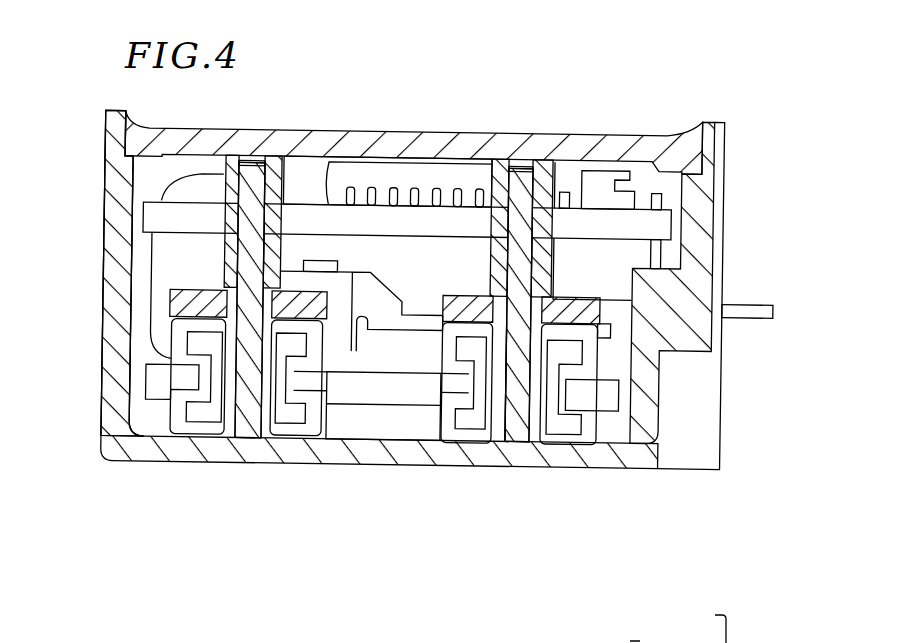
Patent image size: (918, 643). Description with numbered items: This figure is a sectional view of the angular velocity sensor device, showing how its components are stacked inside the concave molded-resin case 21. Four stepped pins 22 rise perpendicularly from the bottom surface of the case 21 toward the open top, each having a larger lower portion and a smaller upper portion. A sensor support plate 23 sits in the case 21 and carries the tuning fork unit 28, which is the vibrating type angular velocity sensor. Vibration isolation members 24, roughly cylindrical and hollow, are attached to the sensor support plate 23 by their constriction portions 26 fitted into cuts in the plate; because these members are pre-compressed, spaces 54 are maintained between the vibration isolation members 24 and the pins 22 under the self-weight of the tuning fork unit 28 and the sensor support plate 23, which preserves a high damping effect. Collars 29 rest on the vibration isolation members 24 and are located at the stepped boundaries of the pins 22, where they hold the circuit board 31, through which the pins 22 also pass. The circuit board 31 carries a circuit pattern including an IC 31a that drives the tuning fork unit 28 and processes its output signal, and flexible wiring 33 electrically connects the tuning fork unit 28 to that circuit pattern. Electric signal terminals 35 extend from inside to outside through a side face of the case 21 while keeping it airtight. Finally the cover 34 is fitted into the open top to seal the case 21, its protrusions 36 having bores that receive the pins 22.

The case 21 is at (113, 193).
The pin 22 is at (250, 437).
The sensor support plate 23 is at (389, 400).
The vibration isolation member 24 is at (192, 435).
The constriction portion 26 is at (203, 377).
The tuning fork unit 28 is at (372, 285).
The collar 29 is at (173, 302).
The circuit board 31 is at (660, 232).
The IC 31a is at (453, 177).
The flexible wiring 33 is at (152, 258).
The cover 34 is at (600, 147).
The electric signal terminal 35 is at (762, 316).
The protrusion 36 is at (256, 150).
The space 54 is at (488, 440).